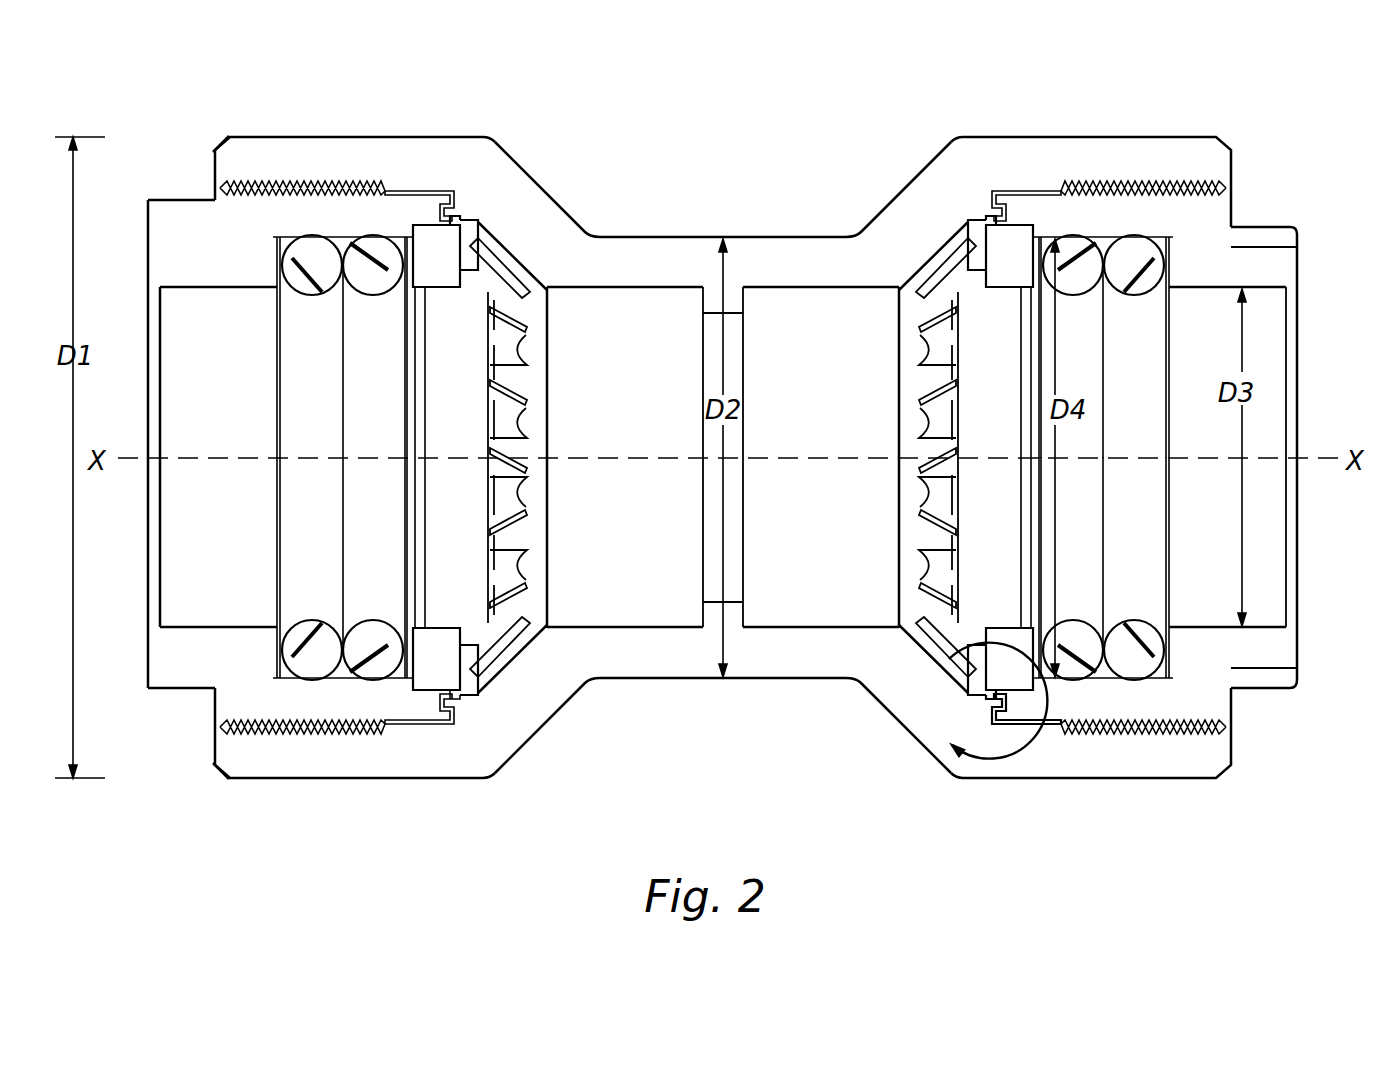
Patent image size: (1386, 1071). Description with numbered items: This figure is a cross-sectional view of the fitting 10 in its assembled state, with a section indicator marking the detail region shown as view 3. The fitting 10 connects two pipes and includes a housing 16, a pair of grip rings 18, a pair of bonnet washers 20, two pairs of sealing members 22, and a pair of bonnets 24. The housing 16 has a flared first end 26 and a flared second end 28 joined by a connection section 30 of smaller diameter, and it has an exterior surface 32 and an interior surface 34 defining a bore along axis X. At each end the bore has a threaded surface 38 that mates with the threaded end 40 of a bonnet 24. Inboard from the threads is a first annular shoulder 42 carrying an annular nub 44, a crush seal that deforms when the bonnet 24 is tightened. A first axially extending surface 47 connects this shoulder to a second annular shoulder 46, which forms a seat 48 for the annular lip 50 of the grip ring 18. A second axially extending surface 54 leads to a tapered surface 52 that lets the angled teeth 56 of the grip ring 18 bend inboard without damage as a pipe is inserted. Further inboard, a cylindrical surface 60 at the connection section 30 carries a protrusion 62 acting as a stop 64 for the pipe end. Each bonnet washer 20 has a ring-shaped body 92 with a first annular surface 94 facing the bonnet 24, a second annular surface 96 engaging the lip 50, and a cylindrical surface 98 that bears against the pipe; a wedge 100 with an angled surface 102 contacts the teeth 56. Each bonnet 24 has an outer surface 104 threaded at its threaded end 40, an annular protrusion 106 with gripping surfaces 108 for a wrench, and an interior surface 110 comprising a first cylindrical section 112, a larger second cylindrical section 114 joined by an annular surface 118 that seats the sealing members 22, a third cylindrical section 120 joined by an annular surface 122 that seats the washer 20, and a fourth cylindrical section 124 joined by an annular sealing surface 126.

The fitting 10 is at (1272, 77).
The housing 16 is at (818, 228).
The grip ring 18 is at (532, 510).
The bonnet washer 20 is at (972, 247).
The sealing members 22 is at (320, 660).
The bonnet 24 is at (1203, 222).
The first end 26 is at (1194, 124).
The second end 28 is at (314, 125).
The connection section 30 is at (643, 235).
The exterior surface 32 is at (382, 137).
The interior surface 34 is at (612, 622).
The threaded surface 38 is at (335, 195).
The threaded end 40 is at (280, 190).
The first annular shoulder 42 is at (450, 210).
The annular nub 44 is at (452, 690).
The second annular shoulder 46 is at (480, 232).
The first axially extending surface 47 is at (458, 236).
The seat 48 is at (483, 683).
The annular lip 50 is at (972, 245).
The tapered surface 52 is at (540, 267).
The second axially extending surface 54 is at (925, 665).
The teeth 56 is at (503, 403).
The cylindrical surface 60 is at (668, 287).
The protrusion 62 is at (757, 600).
The stop 64 is at (747, 302).
The ring-shaped body 92 is at (433, 262).
The first annular surface 94 is at (395, 660).
The second annular surface 96 is at (968, 250).
The cylindrical surface 98 is at (443, 615).
The wedge 100 is at (470, 620).
The angled surface 102 is at (955, 615).
The outer surface 104 is at (1040, 195).
The annular protrusion 106 is at (1300, 267).
The gripping surfaces 108 is at (1277, 247).
The interior surface 110 is at (1263, 289).
The first cylindrical section 112 is at (1285, 650).
The second cylindrical section 114 is at (1170, 705).
The annular surface 118 is at (1170, 267).
The third cylindrical section 120 is at (1020, 230).
The annular surface 122 is at (1042, 197).
The fourth cylindrical section 124 is at (1003, 713).
The annular sealing surface 126 is at (435, 232).
The section view indicator 3 is at (988, 701).